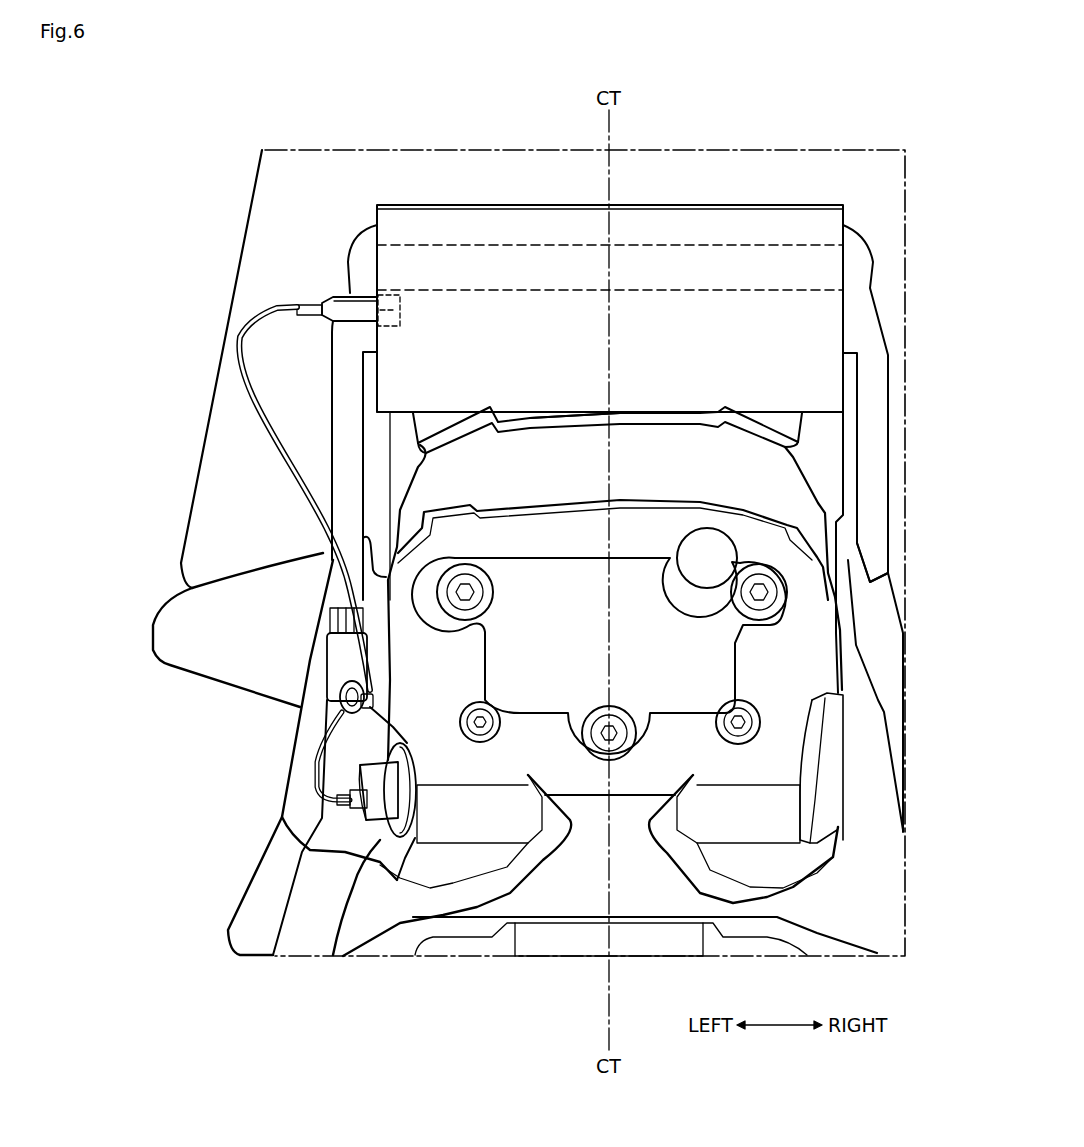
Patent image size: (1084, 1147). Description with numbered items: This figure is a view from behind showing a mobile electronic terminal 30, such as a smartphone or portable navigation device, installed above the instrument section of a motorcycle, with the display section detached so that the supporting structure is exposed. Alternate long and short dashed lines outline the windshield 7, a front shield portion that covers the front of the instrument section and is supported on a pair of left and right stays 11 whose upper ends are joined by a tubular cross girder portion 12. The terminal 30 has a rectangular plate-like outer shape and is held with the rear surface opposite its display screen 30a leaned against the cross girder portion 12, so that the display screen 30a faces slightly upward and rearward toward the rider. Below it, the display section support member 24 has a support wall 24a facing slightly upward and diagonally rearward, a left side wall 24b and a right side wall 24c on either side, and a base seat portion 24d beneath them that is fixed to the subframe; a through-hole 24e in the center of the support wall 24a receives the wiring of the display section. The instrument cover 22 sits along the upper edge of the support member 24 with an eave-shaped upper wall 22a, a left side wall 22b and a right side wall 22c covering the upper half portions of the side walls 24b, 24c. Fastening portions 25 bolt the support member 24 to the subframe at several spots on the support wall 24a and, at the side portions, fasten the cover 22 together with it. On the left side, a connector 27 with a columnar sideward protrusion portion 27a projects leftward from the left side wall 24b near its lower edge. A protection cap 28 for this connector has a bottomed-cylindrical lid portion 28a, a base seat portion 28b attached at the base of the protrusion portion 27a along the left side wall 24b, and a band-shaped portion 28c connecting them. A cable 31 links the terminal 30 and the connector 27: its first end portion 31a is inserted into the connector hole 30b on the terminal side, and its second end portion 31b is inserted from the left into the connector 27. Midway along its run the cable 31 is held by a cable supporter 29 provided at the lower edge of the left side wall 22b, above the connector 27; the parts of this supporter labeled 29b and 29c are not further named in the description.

The windshield 7 is at (268, 215).
The stays 11 is at (352, 415).
The cross girder portion 12 is at (730, 260).
The instrument cover 22 is at (778, 425).
The upper wall 22a is at (645, 412).
The left side wall 22b is at (367, 580).
The right side wall 22c is at (850, 557).
The display section support member 24 is at (500, 897).
The support wall 24a is at (555, 530).
The left side wall 24b is at (395, 845).
The right side wall 24c is at (823, 760).
The base seat portion 24d is at (540, 855).
The through-hole 24e is at (652, 630).
The fastening portions 25 is at (490, 712).
The connector 27 is at (345, 814).
The sideward protrusion portion 27a is at (385, 778).
The protection cap 28 is at (239, 757).
The lid portion 28a is at (340, 652).
The base seat portion 28b is at (405, 840).
The band-shaped portion 28c is at (385, 730).
The cable supporter 29 is at (271, 710).
The cable clamp ring 29b is at (340, 700).
The cable clamp bolt 29c is at (370, 705).
The mobile electronic terminal 30 is at (658, 198).
The display screen 30a is at (566, 325).
The connector hole 30b is at (400, 310).
The cable 31 is at (300, 516).
The first end portion 31a is at (362, 303).
The second end portion 31b is at (362, 788).